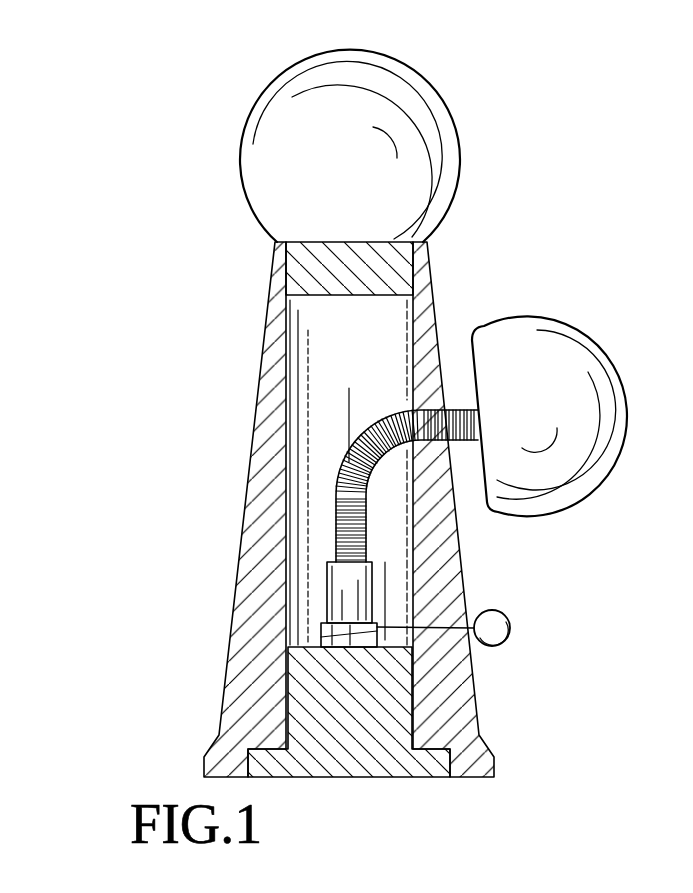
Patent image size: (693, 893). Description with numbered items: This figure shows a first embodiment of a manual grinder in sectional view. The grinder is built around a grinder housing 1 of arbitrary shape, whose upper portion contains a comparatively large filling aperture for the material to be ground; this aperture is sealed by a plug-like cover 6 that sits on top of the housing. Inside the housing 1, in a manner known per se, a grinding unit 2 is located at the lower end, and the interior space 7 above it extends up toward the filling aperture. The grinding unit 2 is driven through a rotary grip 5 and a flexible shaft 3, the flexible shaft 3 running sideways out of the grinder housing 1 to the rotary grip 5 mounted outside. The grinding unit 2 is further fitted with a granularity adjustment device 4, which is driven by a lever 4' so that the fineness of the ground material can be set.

The grinder housing 1 is at (467, 723).
The grinding unit 2 is at (387, 763).
The flexible shaft 3 is at (344, 478).
The granularity adjustment device 4 is at (426, 593).
The lever 4' is at (468, 644).
The rotary grip 5 is at (580, 360).
The plug-like cover 6 is at (441, 157).
The cavity 7 is at (318, 365).